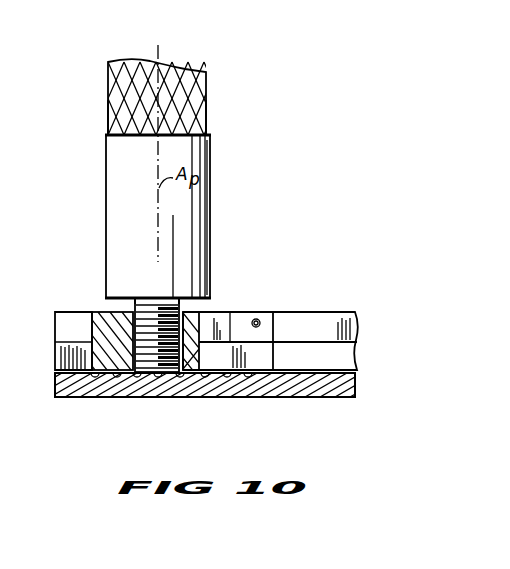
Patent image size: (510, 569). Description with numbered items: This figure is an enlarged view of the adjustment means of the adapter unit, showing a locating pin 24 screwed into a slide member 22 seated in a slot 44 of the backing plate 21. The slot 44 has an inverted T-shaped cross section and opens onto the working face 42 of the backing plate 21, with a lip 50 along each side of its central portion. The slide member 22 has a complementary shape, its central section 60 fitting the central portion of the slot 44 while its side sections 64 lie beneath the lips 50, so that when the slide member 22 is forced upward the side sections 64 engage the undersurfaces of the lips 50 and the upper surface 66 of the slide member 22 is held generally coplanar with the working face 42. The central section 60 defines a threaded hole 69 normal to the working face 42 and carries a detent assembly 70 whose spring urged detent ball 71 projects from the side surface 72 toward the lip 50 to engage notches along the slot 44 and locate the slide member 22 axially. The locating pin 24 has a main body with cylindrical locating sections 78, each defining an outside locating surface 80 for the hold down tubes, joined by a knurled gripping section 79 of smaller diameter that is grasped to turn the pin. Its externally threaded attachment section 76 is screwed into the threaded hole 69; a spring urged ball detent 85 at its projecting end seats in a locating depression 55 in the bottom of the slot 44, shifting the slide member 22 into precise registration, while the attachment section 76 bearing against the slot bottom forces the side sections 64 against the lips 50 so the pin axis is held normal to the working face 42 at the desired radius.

The backing plate 21 is at (357, 396).
The slide member 22 is at (98, 310).
The locating pin 24 is at (197, 61).
The working face 42 is at (316, 312).
The slot 44 is at (347, 358).
The lip 50 is at (361, 326).
The locating depression 55 is at (118, 378).
The central section 60 is at (276, 328).
The side section 64 is at (276, 357).
The upper surface 66 is at (238, 314).
The threaded hole 69 is at (135, 341).
The detent assembly 70 is at (262, 305).
The detent ball 71 is at (259, 320).
The side surface 72 is at (216, 320).
The attachment section 76 is at (165, 296).
The locating section 78 is at (209, 175).
The knurled gripping section 79 is at (201, 110).
The locating surface 80 is at (204, 236).
The ball detent 85 is at (165, 378).